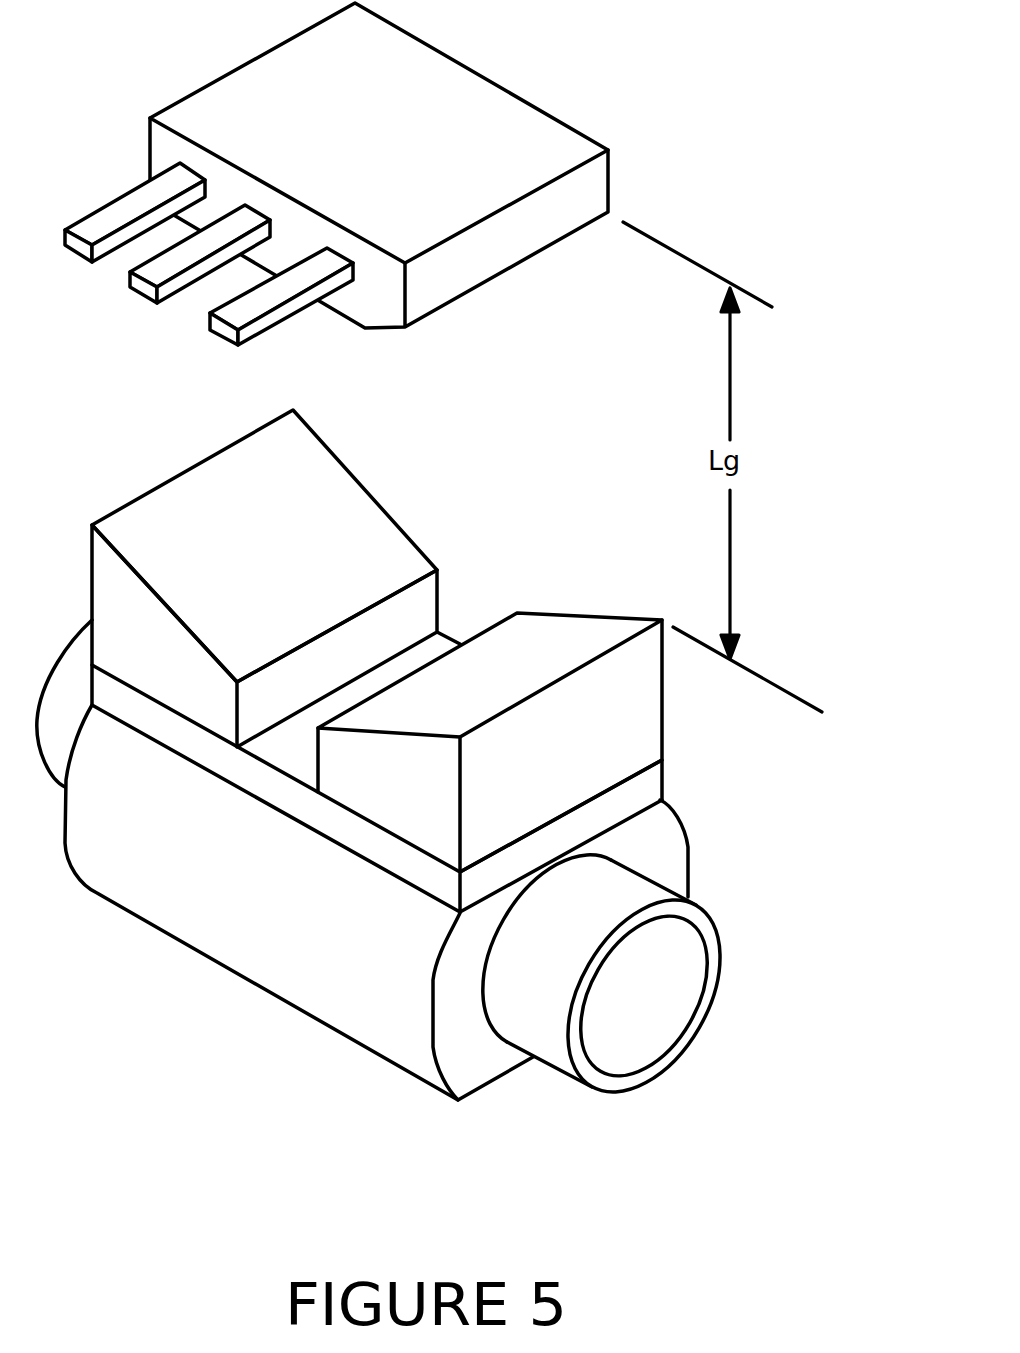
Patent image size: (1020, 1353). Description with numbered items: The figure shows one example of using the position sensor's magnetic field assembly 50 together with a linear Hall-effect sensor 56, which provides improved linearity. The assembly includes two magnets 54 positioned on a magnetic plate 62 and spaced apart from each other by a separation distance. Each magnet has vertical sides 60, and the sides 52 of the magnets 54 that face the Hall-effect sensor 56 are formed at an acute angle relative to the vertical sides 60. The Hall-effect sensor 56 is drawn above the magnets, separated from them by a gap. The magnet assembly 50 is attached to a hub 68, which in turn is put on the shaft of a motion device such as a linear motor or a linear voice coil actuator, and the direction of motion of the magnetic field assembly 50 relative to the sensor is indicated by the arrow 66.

The magnetic field assembly 50 is at (430, 752).
The sides of the magnets 52 is at (372, 633).
The magnets 54 is at (94, 479).
The Hall-effect sensor 56 is at (565, 138).
The vertical sides of the magnets 60 is at (372, 641).
The magnetic plate 62 is at (286, 799).
The arrow 66 is at (671, 1016).
The hub 68 is at (434, 869).